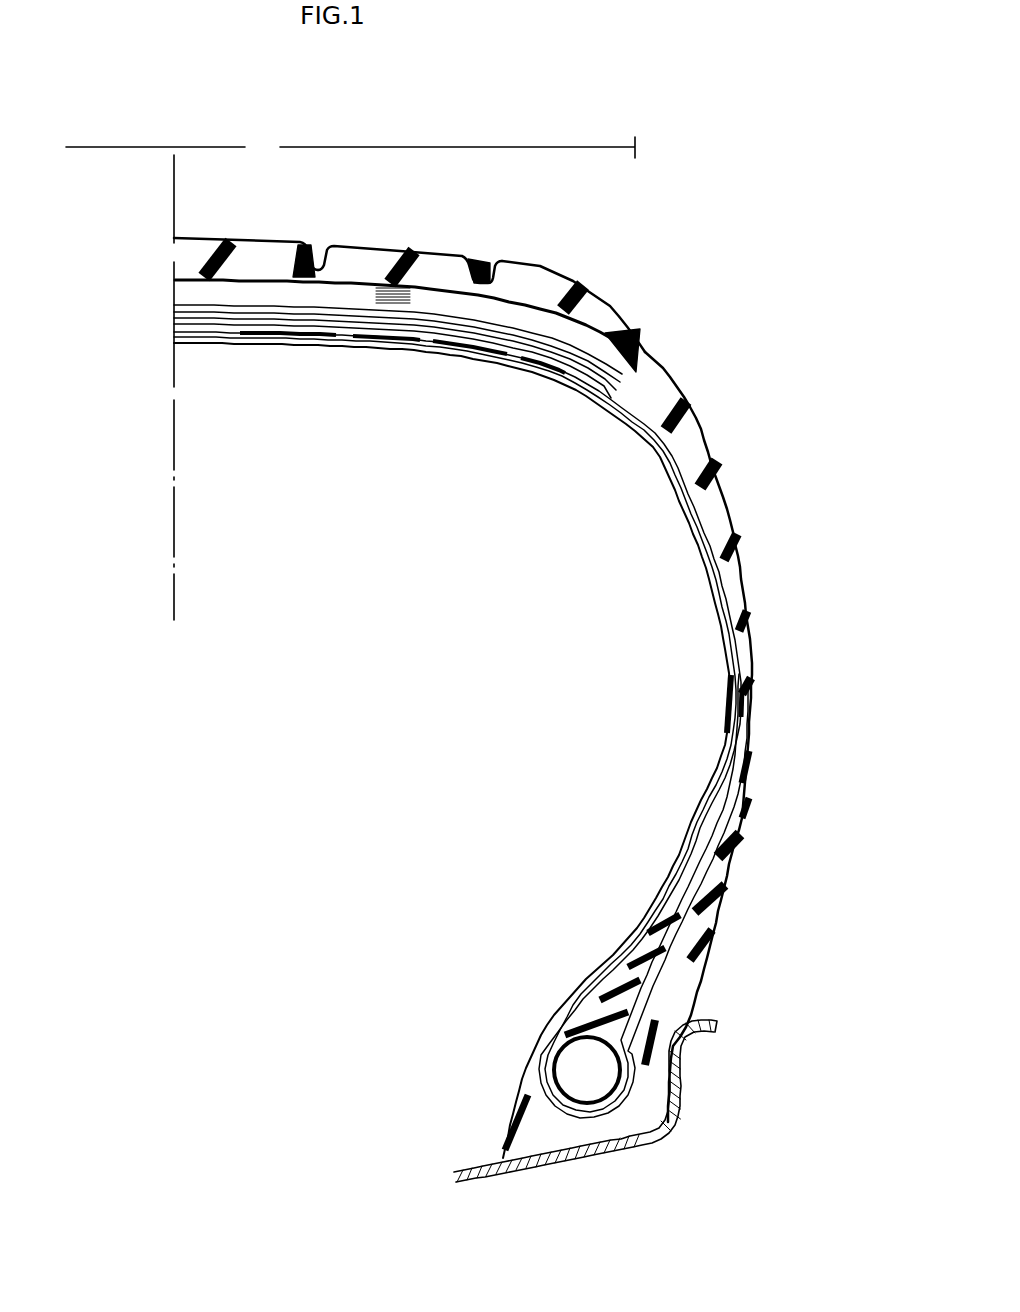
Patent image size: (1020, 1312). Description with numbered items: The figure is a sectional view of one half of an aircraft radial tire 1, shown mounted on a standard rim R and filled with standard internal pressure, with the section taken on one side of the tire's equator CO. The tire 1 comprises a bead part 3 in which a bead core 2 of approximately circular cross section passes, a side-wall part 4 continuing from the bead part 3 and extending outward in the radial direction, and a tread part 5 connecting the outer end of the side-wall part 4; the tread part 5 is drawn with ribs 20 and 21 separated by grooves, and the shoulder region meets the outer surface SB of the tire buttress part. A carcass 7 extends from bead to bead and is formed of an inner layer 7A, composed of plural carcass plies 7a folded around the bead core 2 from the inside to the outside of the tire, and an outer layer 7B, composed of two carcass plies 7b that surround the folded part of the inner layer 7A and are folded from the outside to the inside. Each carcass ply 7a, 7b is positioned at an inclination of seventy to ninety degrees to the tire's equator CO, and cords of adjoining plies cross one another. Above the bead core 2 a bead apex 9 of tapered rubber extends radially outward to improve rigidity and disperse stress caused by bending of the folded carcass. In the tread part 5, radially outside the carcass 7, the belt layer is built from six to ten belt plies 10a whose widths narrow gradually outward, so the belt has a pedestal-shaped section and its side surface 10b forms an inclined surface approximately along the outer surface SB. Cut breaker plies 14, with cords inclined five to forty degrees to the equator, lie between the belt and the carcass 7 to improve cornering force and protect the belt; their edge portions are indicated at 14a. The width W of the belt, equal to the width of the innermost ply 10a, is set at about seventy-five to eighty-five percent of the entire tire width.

The tire 1 is at (777, 482).
The bead core 2 is at (580, 1072).
The bead part 3 is at (688, 1084).
The side-wall part 4 is at (758, 607).
The tread part 5 is at (395, 234).
The carcass 7 is at (506, 725).
The inner layer 7A is at (733, 660).
The outer layer 7B is at (733, 593).
The carcass ply 7a is at (730, 703).
The carcass ply 7b is at (743, 705).
The bead apex 9 is at (597, 1007).
The belt ply 10a is at (408, 313).
The side surface 10b is at (627, 332).
The cut breaker 14 is at (360, 330).
The band ply edge portion 14a is at (567, 326).
The tread rib 20 is at (257, 240).
The shoulder tread rib 21 is at (527, 262).
The tire's equator CO is at (172, 238).
The outer surface of tire buttress part SB is at (673, 377).
The standard rim R is at (585, 1163).
The width of belt layer W is at (350, 147).